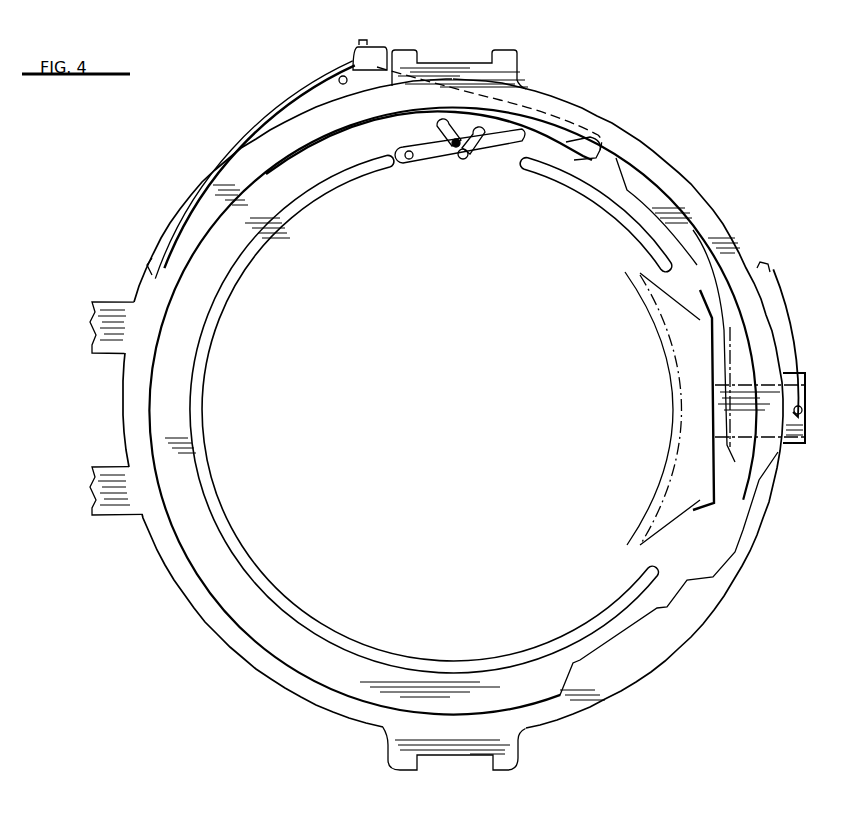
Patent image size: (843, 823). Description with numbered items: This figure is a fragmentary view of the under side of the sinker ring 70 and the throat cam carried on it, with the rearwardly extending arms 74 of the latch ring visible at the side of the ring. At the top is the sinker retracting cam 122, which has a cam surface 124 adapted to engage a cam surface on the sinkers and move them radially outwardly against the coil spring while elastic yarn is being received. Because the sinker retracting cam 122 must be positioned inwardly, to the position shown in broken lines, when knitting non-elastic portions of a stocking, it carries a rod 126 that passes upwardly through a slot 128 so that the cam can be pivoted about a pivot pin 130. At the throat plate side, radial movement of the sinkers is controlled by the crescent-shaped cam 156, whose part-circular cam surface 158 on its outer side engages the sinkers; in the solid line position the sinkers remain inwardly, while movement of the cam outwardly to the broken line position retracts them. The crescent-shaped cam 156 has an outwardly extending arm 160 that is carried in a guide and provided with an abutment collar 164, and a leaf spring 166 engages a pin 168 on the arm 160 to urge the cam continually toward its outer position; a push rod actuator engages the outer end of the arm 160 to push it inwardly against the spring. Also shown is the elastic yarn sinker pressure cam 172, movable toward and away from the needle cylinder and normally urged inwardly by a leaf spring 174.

The sinker ring 70 is at (688, 633).
The rearwardly extending arms 74 is at (108, 318).
The sinker retracting cam 122 is at (452, 152).
The cam surface 124 is at (490, 140).
The rod 126 is at (459, 140).
The slot 128 is at (446, 122).
The pivot pin 130 is at (418, 158).
The crescent-shaped cam 156 is at (672, 383).
The part-circular cam surface 158 is at (706, 320).
The outwardly extending arm 160 is at (745, 430).
The abutment collar 164 is at (801, 400).
The leaf spring 166 is at (793, 308).
The pin 168 is at (792, 440).
The elastic yarn sinker pressure cam 172 is at (548, 140).
The leaf spring 174 is at (272, 108).